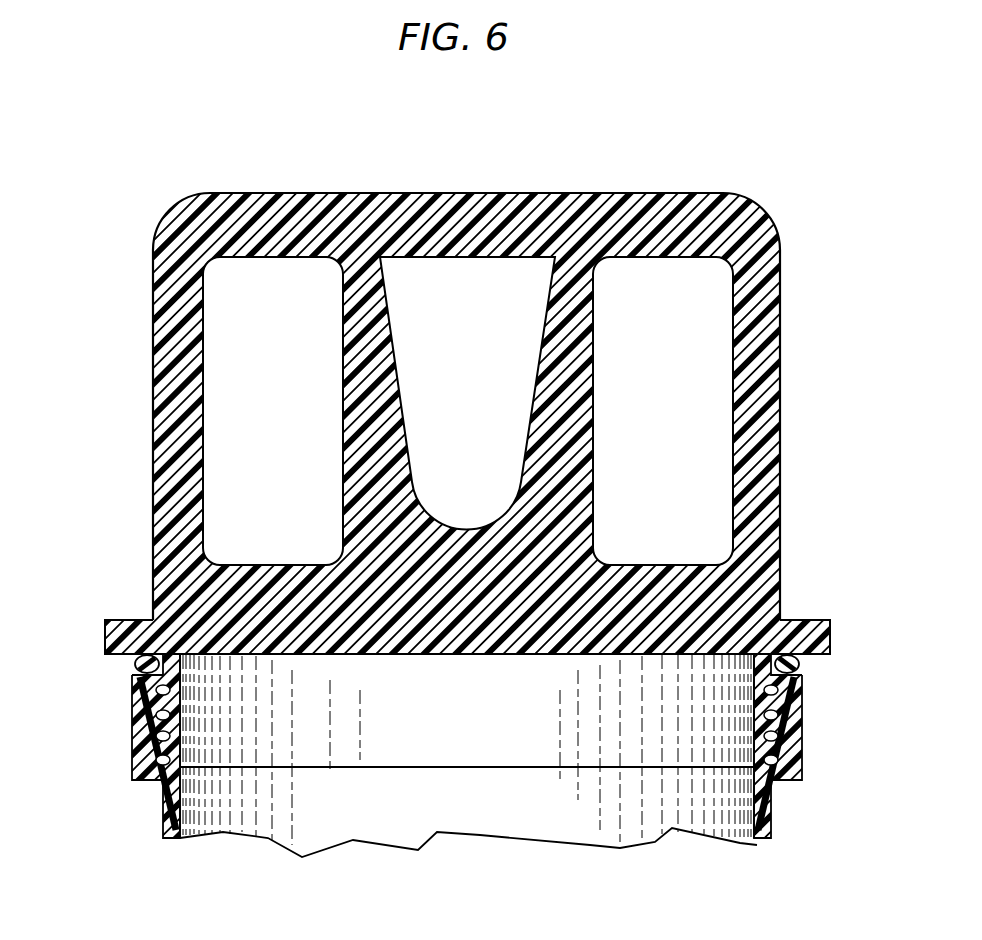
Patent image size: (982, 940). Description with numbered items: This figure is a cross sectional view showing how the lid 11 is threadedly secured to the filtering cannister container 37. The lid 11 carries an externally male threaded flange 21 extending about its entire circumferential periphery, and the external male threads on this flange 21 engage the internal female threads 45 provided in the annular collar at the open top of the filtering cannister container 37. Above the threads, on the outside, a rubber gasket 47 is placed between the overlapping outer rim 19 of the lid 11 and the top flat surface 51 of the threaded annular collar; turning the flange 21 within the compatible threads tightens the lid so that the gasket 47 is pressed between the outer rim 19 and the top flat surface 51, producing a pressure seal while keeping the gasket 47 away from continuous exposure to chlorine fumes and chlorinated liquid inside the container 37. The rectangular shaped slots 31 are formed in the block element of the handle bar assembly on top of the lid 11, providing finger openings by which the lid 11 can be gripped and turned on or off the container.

The lid 11 is at (662, 177).
The overlapping outer rim 19 is at (106, 632).
The externally male threaded flange 21 is at (180, 762).
The rectangular shaped slots 31 is at (290, 363).
The filtering cannister container 37 is at (691, 856).
The internal female threads 45 is at (158, 731).
The rubber gasket 47 is at (135, 665).
The top flat surface 51 is at (158, 691).